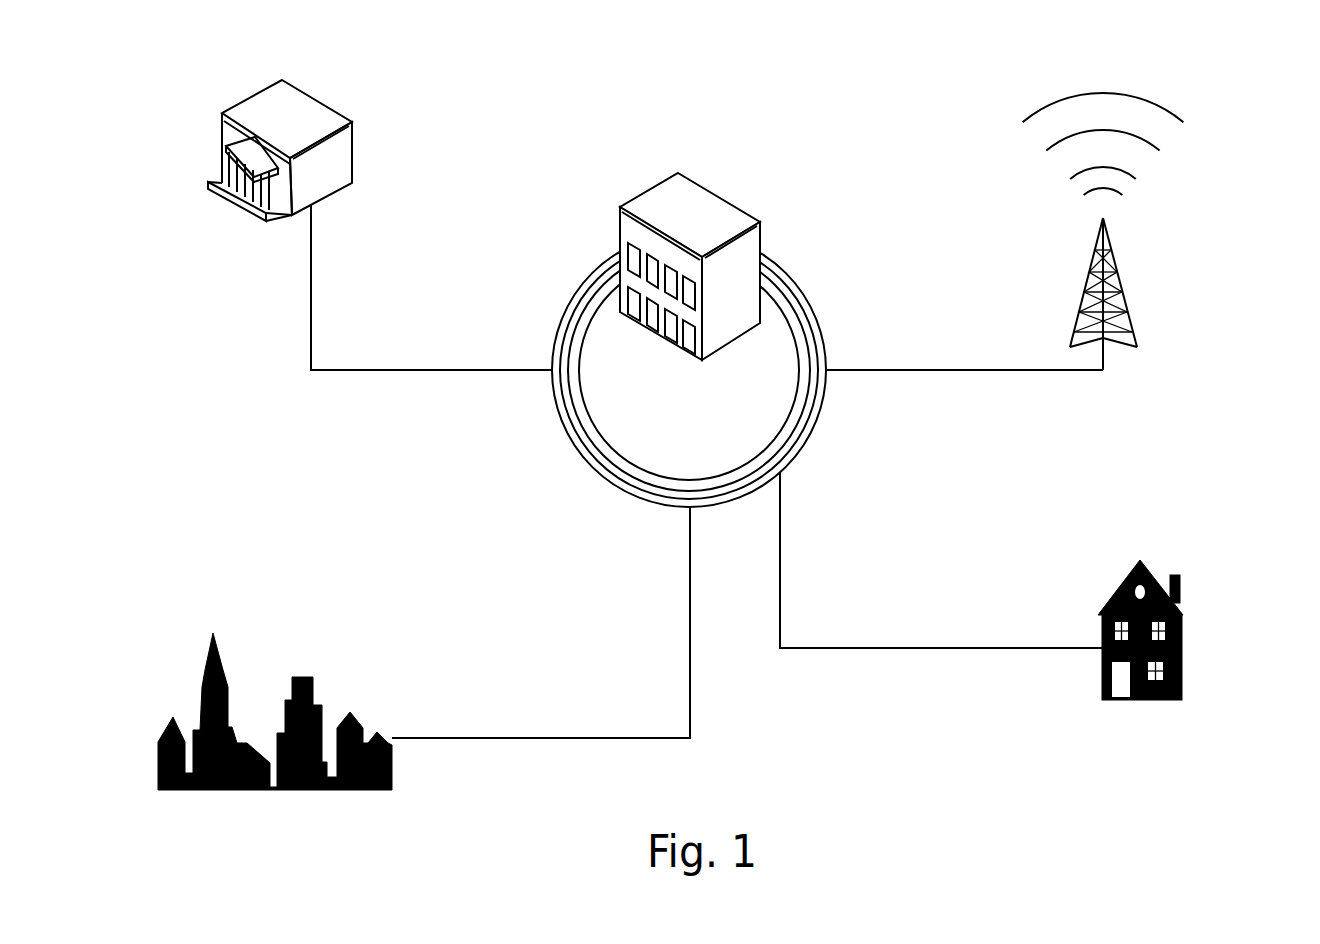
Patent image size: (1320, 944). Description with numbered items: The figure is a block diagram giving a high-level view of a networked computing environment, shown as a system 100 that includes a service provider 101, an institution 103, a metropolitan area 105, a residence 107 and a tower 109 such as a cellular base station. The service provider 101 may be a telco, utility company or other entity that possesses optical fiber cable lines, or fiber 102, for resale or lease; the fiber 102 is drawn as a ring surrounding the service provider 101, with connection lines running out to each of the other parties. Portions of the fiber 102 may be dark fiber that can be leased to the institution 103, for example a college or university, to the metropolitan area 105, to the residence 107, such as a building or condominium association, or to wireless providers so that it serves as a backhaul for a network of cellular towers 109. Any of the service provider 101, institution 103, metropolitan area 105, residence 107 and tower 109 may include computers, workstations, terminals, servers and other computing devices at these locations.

The system 100 is at (138, 39).
The service provider 101 is at (698, 150).
The optical fiber cable lines 102 is at (810, 298).
The institution 103 is at (343, 122).
The metropolitan area 105 is at (305, 673).
The residence 107 is at (1175, 572).
The tower 109 is at (1127, 303).